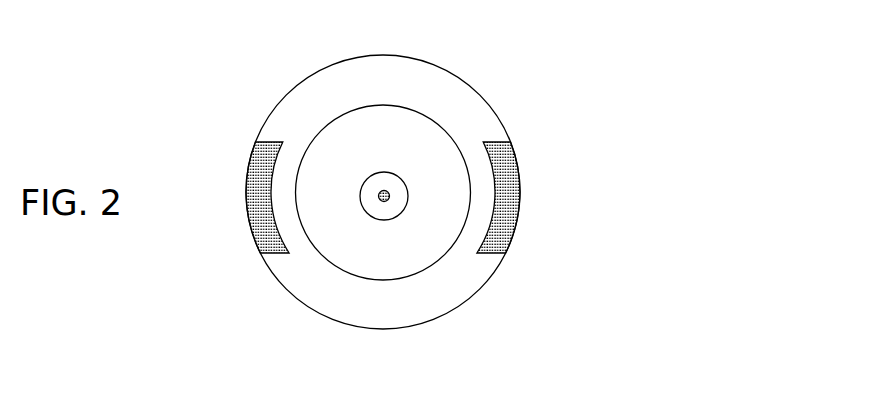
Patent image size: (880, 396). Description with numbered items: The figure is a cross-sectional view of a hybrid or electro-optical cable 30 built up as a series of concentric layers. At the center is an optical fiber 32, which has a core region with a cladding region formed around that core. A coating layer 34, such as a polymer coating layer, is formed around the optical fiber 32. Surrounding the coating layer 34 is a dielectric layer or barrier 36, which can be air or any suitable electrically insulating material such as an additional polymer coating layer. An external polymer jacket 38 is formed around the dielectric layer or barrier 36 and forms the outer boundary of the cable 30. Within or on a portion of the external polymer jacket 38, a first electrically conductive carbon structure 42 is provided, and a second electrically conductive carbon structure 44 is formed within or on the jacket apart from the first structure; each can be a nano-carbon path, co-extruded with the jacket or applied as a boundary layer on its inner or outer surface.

The hybrid or electro-optical cable 30 is at (746, 38).
The optical fiber 32 is at (384, 196).
The coating layer 34 is at (381, 172).
The dielectric layer or barrier 36 is at (408, 260).
The external polymer jacket 38 is at (382, 318).
The first electrically conductive carbon structure 42 is at (252, 207).
The second electrically conductive carbon structure 44 is at (513, 188).